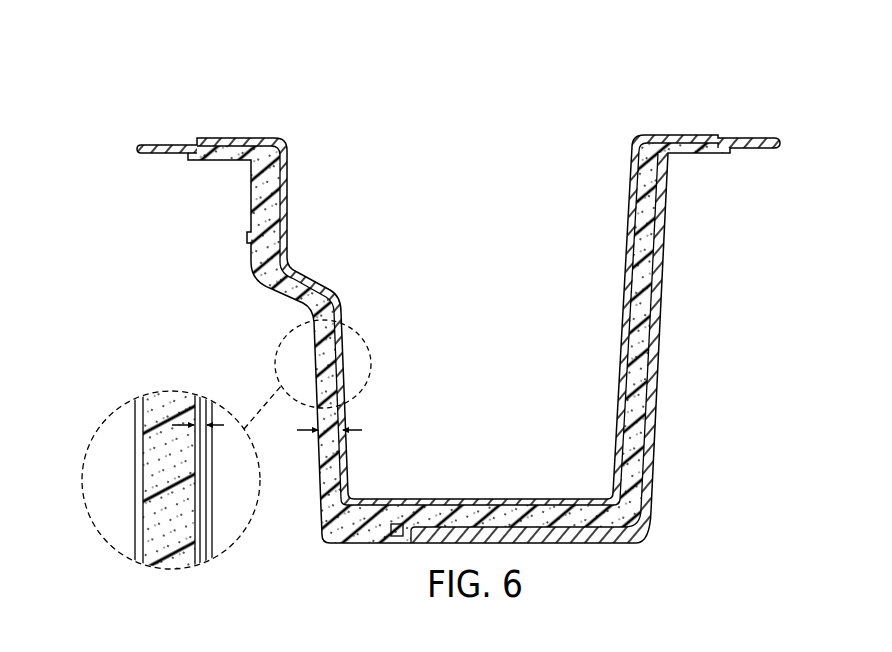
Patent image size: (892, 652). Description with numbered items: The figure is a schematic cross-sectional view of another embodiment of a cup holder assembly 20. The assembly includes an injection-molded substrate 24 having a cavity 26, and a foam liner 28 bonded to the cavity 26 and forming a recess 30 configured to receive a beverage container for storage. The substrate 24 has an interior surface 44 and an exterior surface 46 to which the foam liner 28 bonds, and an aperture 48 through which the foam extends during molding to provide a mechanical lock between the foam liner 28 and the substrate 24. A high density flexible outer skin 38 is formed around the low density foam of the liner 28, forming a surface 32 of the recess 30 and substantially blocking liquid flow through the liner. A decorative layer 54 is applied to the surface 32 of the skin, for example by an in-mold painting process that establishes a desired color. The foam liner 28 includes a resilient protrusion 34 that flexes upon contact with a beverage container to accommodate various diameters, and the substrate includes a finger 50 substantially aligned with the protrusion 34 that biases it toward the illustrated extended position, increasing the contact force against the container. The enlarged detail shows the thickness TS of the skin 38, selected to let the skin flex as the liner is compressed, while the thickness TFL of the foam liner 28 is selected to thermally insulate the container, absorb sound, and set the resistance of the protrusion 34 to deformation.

The cup holder assembly 20 is at (468, 304).
The substrate 24 is at (757, 149).
The cavity 26 is at (643, 111).
The foam liner 28 is at (640, 294).
The recess 30 is at (470, 208).
The surface 32 is at (207, 478).
The protrusion 34 is at (385, 368).
The skin 38 is at (203, 553).
The interior surface 44 is at (280, 190).
The exterior surface 46 is at (251, 198).
The aperture 48 is at (408, 538).
The finger 50 is at (320, 287).
The decorative layer 54 is at (534, 501).
The thickness of the skin TS is at (198, 400).
The thickness of the foam liner TFL is at (332, 433).